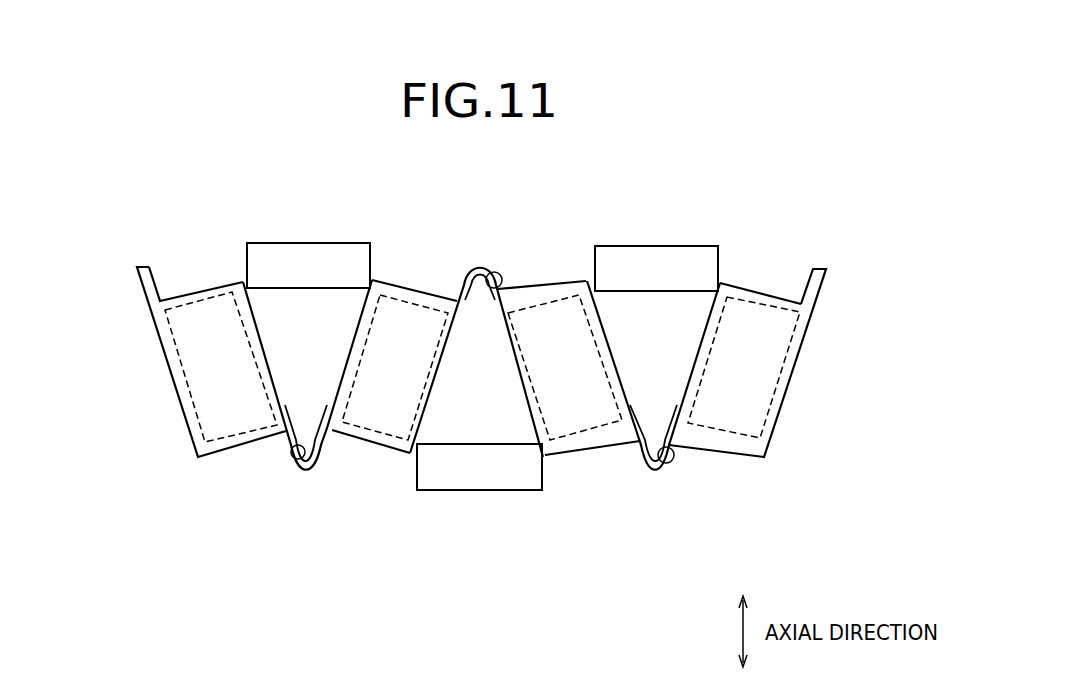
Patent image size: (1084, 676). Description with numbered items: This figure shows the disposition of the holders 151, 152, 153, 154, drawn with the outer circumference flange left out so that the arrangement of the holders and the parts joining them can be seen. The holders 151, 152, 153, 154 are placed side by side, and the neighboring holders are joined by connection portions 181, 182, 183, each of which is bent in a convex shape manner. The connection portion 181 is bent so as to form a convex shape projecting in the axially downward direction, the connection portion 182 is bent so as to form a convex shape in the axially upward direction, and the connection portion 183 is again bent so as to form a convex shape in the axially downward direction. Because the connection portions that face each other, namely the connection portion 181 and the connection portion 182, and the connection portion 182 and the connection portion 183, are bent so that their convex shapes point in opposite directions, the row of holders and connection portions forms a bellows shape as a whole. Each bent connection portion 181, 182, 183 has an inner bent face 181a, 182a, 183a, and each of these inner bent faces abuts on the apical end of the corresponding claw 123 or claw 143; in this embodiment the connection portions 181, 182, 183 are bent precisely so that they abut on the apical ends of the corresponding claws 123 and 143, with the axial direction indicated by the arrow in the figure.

The claw 123 is at (481, 430).
The claw 143 is at (306, 297).
The holder 151 is at (170, 387).
The holder 152 is at (421, 283).
The holder 153 is at (538, 284).
The holder 154 is at (794, 389).
The connection portion 181 is at (305, 471).
The inner bent face 181a is at (290, 457).
The connection portion 182 is at (479, 267).
The inner bent face 182a is at (500, 273).
The connection portion 183 is at (655, 472).
The inner bent face 183a is at (673, 460).